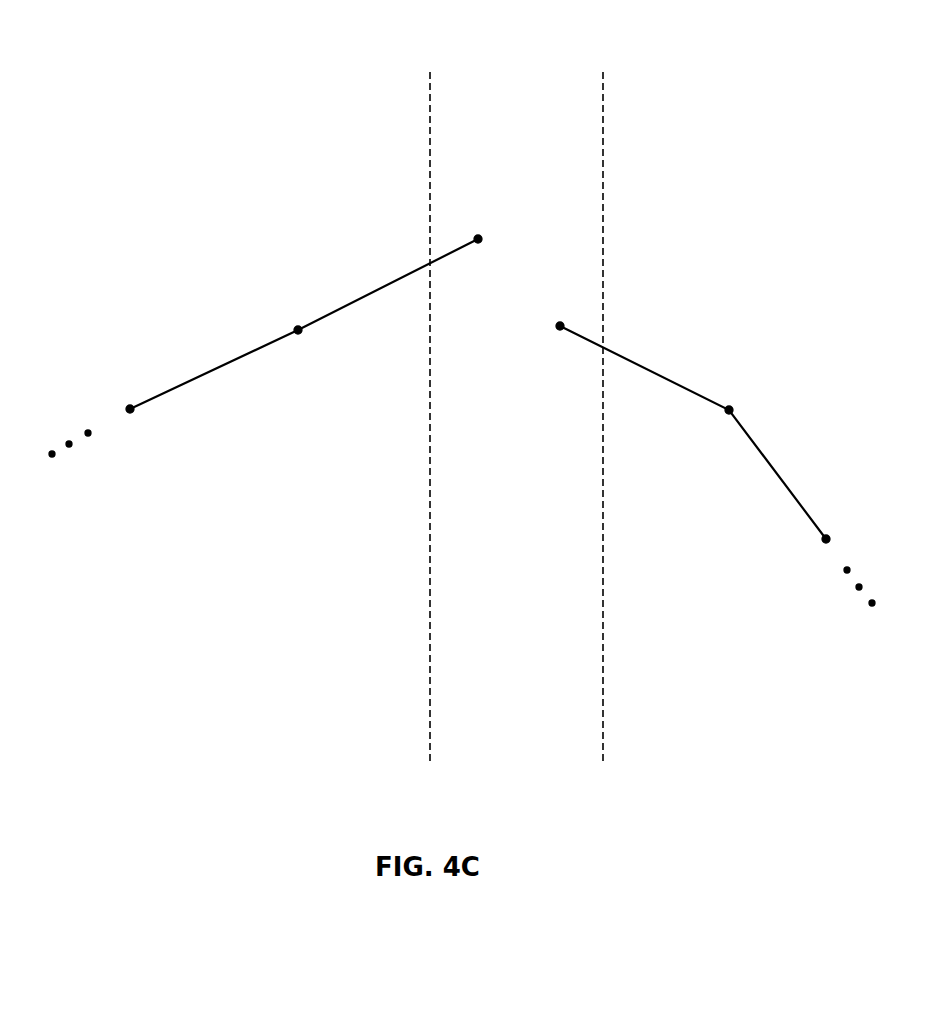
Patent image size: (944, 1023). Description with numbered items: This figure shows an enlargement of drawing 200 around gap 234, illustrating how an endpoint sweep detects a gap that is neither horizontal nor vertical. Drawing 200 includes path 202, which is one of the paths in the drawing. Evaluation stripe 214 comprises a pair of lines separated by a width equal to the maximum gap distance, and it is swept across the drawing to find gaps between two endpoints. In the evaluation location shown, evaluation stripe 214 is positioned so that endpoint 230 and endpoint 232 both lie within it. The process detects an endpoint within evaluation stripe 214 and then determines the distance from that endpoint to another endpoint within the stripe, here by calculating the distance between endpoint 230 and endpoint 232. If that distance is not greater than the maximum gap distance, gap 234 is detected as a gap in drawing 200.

The drawing 200 is at (694, 60).
The path 202 is at (215, 368).
The evaluation stripe 214 is at (765, 455).
The endpoint 230 is at (479, 236).
The endpoint 232 is at (560, 323).
The gap 234 is at (521, 285).